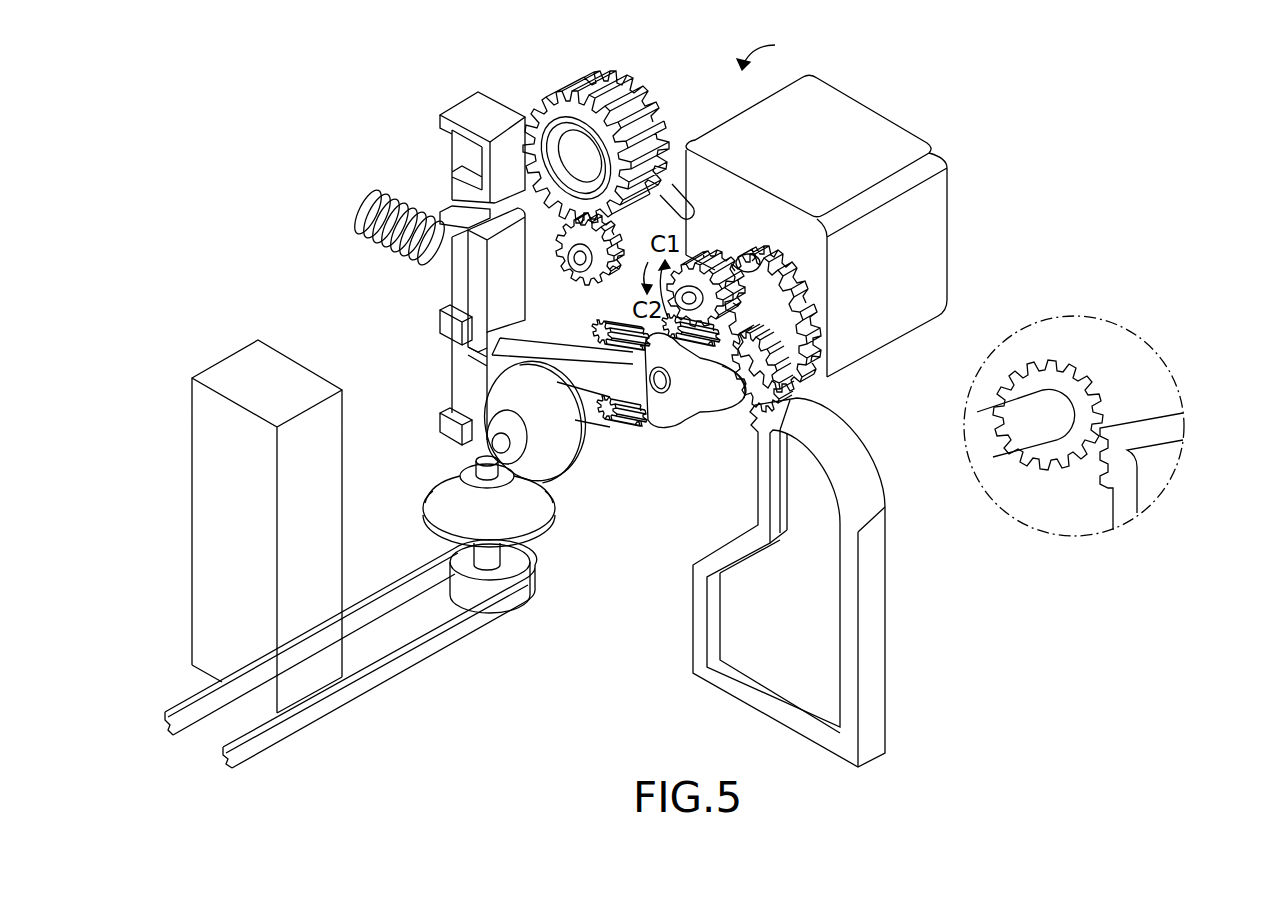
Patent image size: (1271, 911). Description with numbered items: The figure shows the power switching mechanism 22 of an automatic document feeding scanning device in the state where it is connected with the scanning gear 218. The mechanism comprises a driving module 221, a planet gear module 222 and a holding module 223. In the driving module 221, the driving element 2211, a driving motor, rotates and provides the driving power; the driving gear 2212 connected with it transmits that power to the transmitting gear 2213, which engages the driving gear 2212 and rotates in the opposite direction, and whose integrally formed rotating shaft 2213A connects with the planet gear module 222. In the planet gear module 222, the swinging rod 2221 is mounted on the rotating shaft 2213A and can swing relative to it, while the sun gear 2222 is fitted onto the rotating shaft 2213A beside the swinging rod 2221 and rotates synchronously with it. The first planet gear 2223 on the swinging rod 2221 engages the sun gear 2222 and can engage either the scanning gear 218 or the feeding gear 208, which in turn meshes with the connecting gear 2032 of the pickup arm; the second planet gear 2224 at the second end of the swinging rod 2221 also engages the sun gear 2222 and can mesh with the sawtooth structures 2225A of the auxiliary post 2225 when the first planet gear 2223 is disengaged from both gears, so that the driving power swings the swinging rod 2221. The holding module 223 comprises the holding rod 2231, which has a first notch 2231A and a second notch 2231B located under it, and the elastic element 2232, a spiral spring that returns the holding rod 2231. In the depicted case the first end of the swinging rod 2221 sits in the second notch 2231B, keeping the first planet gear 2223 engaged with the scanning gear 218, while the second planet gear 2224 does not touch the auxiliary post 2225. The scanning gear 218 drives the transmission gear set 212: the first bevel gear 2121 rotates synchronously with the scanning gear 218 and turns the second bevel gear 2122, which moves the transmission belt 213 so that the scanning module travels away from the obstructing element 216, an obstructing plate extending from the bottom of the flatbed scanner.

The power switching mechanism 22 is at (772, 48).
The feeding gear 208 is at (553, 86).
The connecting gear 2032 is at (603, 93).
The transmission gear set 212 is at (733, 296).
The first bevel gear 2121 is at (560, 470).
The second bevel gear 2122 is at (448, 495).
The transmission belt 213 is at (200, 703).
The obstructing element 216 is at (238, 372).
The scanning gear 218 is at (615, 425).
The driving module 221 is at (888, 231).
The driving element 2211 is at (848, 112).
The driving gear 2212 is at (700, 247).
The transmitting gear 2213 is at (821, 311).
The rotating shaft 2213A is at (750, 270).
The planet gear module 222 is at (867, 406).
The swinging rod 2221 is at (673, 413).
The sun gear 2222 is at (655, 428).
The first planet gear 2223 is at (603, 336).
The second planet gear 2224 is at (800, 360).
The auxiliary post 2225 is at (960, 582).
The sawtooth structures 2225A is at (777, 547).
The holding module 223 is at (703, 258).
The holding rod 2231 is at (447, 258).
The first notch 2231A is at (478, 352).
The second notch 2231B is at (440, 212).
The elastic element 2232 is at (385, 193).